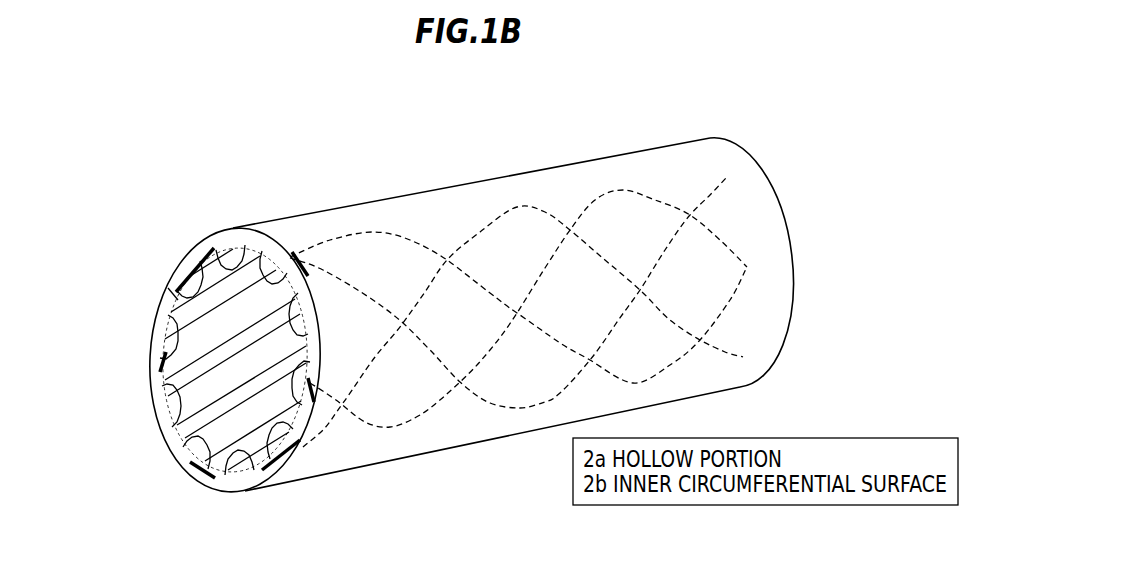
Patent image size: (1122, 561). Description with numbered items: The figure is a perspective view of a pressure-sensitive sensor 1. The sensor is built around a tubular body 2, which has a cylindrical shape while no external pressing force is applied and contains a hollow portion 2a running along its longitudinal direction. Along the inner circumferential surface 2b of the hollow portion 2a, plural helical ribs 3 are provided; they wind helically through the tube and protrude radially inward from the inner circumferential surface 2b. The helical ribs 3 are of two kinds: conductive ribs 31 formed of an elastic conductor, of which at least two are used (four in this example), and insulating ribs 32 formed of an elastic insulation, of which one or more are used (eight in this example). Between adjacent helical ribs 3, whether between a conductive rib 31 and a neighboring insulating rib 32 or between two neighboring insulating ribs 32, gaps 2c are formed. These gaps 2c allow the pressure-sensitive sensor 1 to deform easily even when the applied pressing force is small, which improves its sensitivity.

The pressure-sensitive sensor 1 is at (319, 160).
The tubular body 2 is at (679, 153).
The hollow portion 2a is at (203, 345).
The inner circumferential surface 2b is at (190, 424).
The gap 2c is at (172, 280).
The helical rib 3 is at (427, 506).
The conductive rib 31 is at (228, 471).
The insulating rib 32 is at (213, 471).